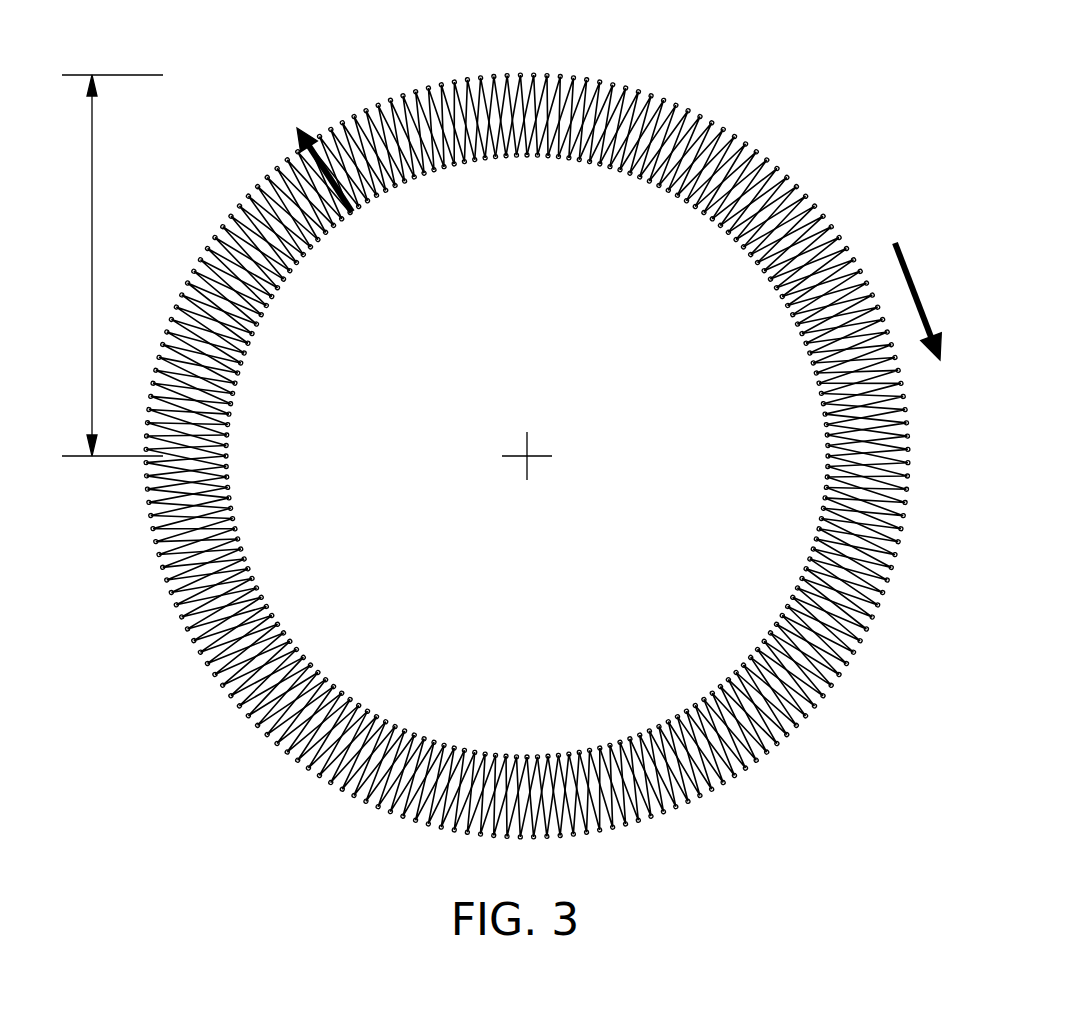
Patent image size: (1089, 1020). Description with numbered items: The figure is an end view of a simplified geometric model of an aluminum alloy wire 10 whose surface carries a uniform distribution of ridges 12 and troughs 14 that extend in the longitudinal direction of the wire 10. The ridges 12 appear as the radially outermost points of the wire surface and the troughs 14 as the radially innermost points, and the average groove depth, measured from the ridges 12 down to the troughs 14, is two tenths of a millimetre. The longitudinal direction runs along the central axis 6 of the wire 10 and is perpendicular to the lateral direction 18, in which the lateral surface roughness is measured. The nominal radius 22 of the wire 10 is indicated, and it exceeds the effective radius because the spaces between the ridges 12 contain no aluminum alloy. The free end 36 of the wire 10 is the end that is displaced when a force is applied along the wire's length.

The central axis 6 is at (527, 457).
The aluminum alloy wire 10 is at (913, 155).
The ridges 12 is at (600, 82).
The troughs 14 is at (548, 156).
The lateral direction 18 is at (912, 288).
The nominal radius 22 is at (92, 167).
The free end 36 is at (664, 601).